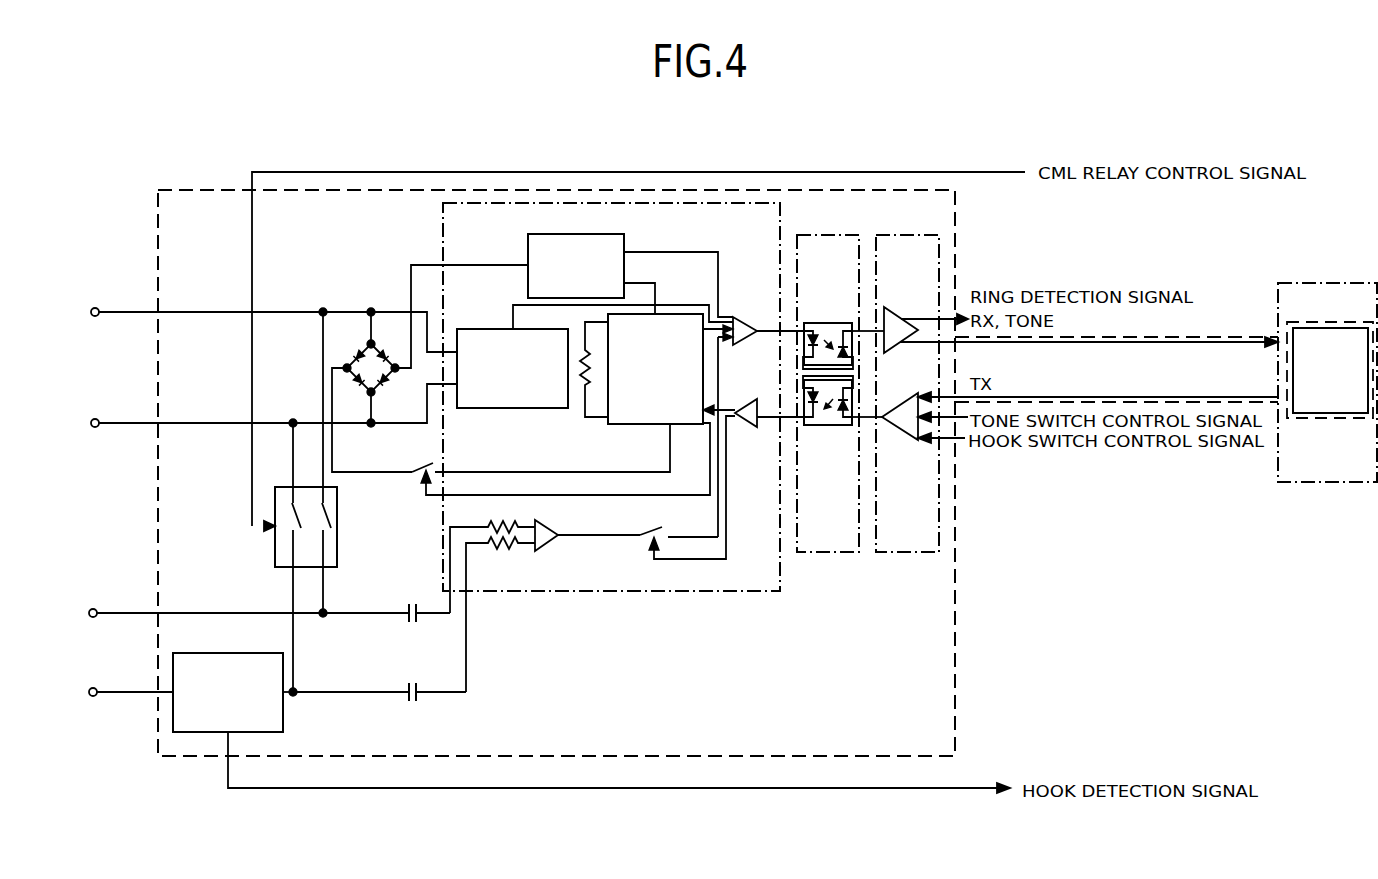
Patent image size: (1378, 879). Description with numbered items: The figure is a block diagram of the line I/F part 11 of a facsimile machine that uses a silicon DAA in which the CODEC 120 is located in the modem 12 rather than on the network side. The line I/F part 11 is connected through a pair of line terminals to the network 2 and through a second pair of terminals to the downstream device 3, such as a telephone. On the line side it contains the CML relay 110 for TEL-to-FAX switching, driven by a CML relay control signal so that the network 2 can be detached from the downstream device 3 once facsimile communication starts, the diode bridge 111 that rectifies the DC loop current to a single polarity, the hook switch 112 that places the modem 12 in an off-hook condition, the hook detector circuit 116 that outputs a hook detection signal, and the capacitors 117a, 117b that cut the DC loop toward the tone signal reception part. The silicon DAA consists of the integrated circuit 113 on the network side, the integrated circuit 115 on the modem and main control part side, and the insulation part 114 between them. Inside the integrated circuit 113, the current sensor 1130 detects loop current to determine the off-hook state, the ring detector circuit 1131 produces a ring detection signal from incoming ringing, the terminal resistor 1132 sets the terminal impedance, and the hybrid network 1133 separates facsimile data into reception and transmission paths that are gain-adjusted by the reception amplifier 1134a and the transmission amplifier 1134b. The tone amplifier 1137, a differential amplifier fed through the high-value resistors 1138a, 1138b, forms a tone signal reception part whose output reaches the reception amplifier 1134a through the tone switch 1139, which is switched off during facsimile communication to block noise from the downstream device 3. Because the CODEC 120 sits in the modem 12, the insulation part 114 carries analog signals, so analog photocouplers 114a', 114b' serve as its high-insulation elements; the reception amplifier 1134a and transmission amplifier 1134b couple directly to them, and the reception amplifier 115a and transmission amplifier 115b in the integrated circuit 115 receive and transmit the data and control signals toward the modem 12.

The network 2 is at (247, 366).
The downstream device 3 is at (213, 654).
The line I/F part 11 is at (960, 232).
The modem 12 is at (1328, 283).
The CML relay 110 is at (337, 556).
The diode bridge 111 is at (362, 348).
The hook switch 112 is at (418, 482).
The integrated circuit on the network side 113 is at (713, 594).
The insulation part 114 is at (830, 553).
The analog photocoupler 114a' is at (828, 325).
The analog photocoupler 114b' is at (828, 423).
The integrated circuit on the modem and main control part side 115 is at (907, 553).
The reception amplifier 115a is at (895, 307).
The transmission amplifier 115b is at (899, 439).
The hook detector circuit 116 is at (285, 720).
The capacitor 117a is at (408, 604).
The capacitor 117b is at (408, 683).
The CODEC 120 is at (1330, 413).
The current sensor 1130 is at (528, 245).
The ring detector circuit 1131 is at (510, 408).
The terminal resistor 1132 is at (582, 390).
The hybrid network 1133 is at (656, 425).
The reception amplifier 1134a is at (737, 316).
The transmission amplifier 1134b is at (745, 433).
The tone amplifier 1137 is at (553, 547).
The resistor 1138a is at (494, 521).
The resistor 1138b is at (502, 554).
The tone switch 1139 is at (668, 527).